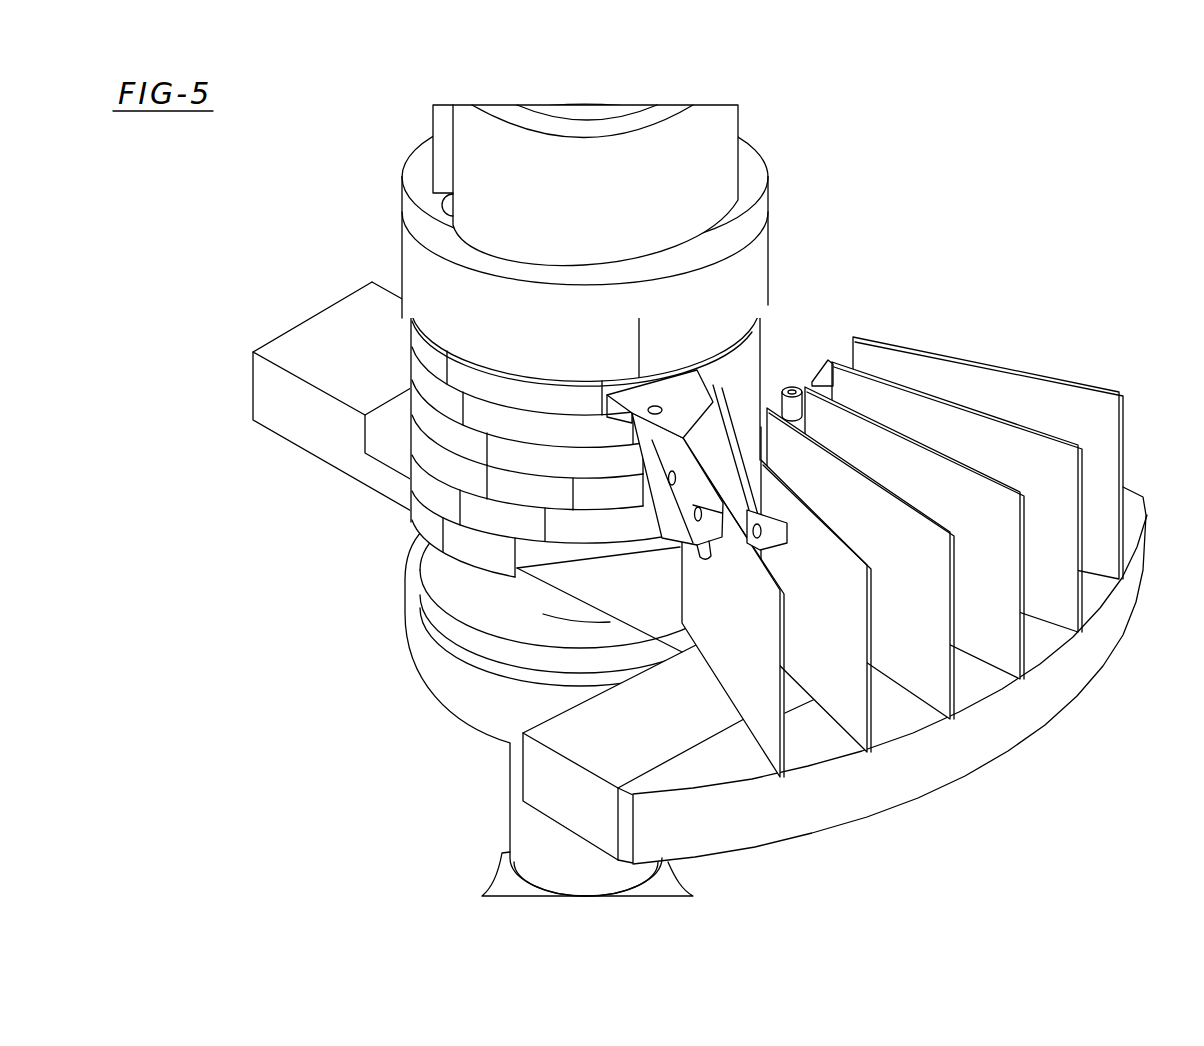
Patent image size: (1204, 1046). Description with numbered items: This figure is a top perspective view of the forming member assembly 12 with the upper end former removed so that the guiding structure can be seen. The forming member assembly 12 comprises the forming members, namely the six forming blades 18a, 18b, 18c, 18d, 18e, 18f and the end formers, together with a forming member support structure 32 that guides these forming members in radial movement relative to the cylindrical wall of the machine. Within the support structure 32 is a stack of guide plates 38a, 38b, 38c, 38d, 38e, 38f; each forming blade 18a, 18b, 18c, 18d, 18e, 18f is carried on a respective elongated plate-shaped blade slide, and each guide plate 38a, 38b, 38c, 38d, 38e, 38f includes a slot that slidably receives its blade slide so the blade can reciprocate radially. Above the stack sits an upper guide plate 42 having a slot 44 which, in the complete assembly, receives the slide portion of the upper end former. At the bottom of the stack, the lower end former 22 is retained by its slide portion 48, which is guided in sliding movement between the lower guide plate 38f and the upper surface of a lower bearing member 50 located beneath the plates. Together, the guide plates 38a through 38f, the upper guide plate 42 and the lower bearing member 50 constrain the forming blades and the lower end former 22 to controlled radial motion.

The forming member assembly 12 is at (803, 125).
The forming blade 18a is at (765, 728).
The forming blade 18b is at (853, 713).
The forming blade 18c is at (927, 680).
The forming blade 18d is at (997, 647).
The forming blade 18e is at (1060, 590).
The forming blade 18f is at (1100, 530).
The lower end former 22 is at (737, 822).
The forming member support structure 32 is at (760, 338).
The guide plate 38a is at (413, 304).
The guide plate 38b is at (427, 362).
The guide plate 38c is at (417, 388).
The guide plate 38d is at (412, 424).
The guide plate 38e is at (430, 463).
The lower guide plate 38f is at (430, 520).
The upper guide plate 42 is at (762, 233).
The slot 44 is at (750, 288).
The slide portion 48 is at (271, 420).
The lower bearing member 50 is at (450, 572).